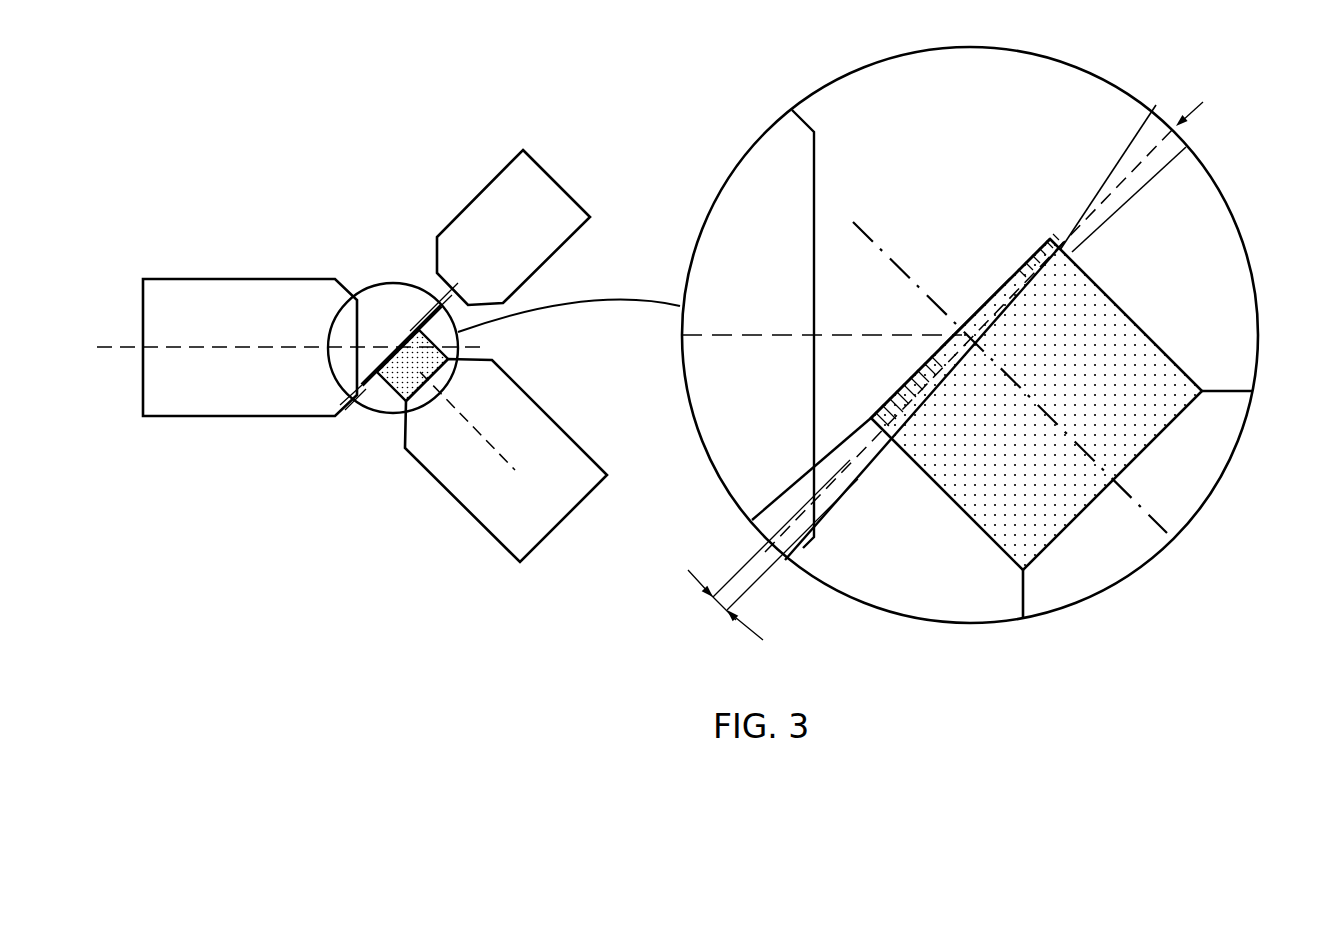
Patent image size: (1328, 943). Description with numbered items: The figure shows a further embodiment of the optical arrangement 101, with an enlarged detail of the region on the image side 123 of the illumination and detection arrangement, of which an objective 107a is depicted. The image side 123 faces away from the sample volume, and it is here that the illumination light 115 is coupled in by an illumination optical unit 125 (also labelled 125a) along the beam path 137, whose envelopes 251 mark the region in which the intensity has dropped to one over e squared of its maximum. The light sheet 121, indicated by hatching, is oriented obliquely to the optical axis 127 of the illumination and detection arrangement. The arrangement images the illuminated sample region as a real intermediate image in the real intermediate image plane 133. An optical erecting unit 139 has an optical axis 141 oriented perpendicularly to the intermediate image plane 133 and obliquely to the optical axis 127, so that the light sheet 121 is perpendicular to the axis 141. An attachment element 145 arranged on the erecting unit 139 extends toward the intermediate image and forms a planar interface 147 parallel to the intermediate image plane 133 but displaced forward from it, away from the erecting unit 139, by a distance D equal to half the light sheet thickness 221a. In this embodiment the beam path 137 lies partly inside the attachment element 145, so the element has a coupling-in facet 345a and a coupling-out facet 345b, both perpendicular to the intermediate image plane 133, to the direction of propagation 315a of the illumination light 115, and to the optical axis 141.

The optical arrangement 101 is at (681, 84).
The objective 107a is at (803, 158).
The illumination light 115 is at (935, 331).
The light sheet 121 is at (1022, 265).
The image side 123 is at (375, 268).
The illumination optical unit 125 is at (530, 235).
The fiber holder block face 125a is at (566, 190).
The optical axis 127 is at (862, 335).
The real intermediate image plane 133 is at (1152, 152).
The beam path 137 is at (1125, 158).
The optical erecting unit 139 is at (1228, 438).
The optical axis 141 is at (1170, 525).
The attachment element 145 is at (1130, 328).
The interface 147 is at (977, 318).
The light sheet thickness 221a is at (807, 413).
The envelopes 251 is at (1093, 187).
The direction of propagation 315a is at (1194, 117).
The coupling-in facet 345a is at (1068, 242).
The coupling-out facet 345b is at (865, 418).
The distance D is at (712, 603).